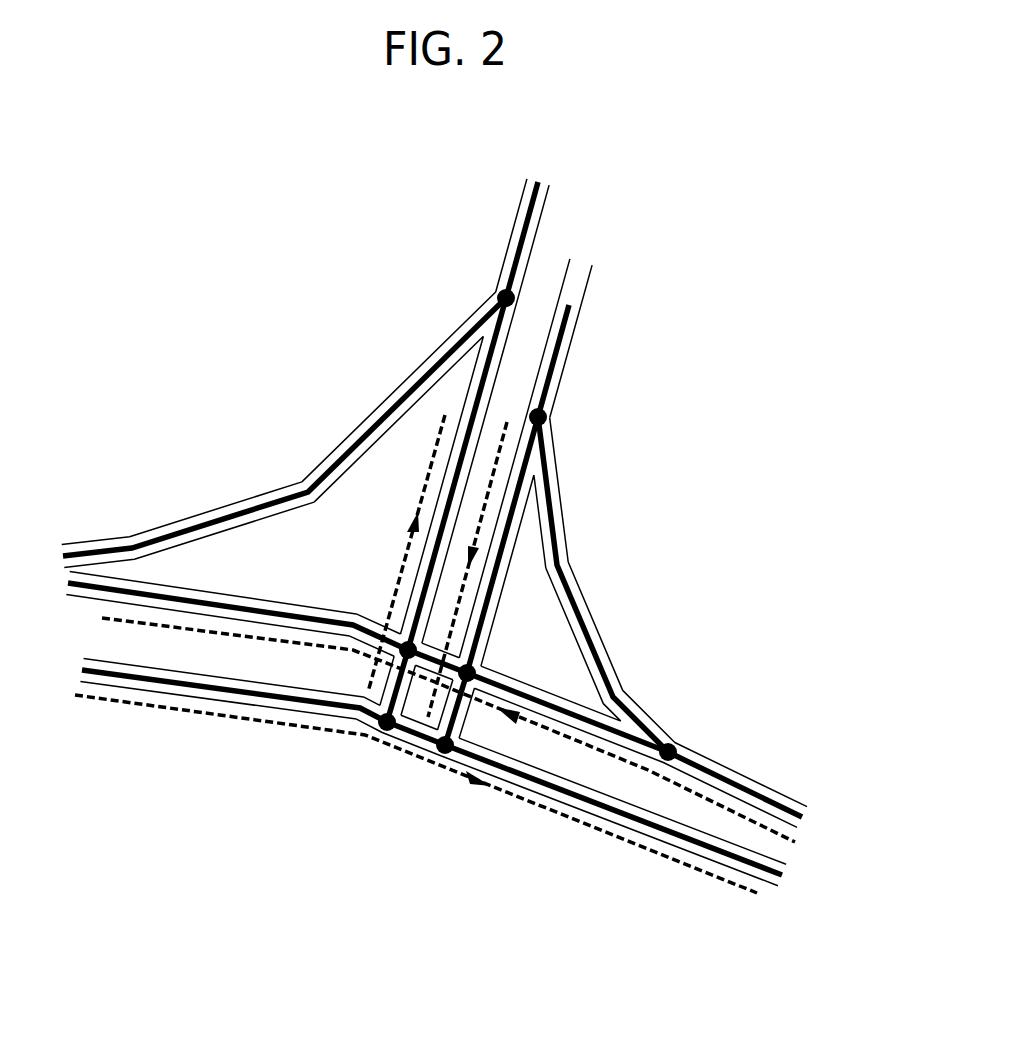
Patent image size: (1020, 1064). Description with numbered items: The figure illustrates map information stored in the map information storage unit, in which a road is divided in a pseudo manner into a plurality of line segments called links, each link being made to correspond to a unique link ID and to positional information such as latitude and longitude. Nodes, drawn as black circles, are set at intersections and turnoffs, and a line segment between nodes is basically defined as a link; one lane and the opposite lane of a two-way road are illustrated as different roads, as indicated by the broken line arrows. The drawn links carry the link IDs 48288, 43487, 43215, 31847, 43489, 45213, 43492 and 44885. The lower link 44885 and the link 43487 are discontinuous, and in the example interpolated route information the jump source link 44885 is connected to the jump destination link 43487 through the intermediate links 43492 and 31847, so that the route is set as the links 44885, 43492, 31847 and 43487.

The link ID 48288 is at (527, 230).
The link ID 43487 is at (438, 542).
The link ID 43215 is at (428, 656).
The link ID 31847 is at (398, 683).
The link ID 43489 is at (547, 703).
The link ID 45213 is at (748, 785).
The link ID 43492 is at (407, 731).
The link ID 44885 is at (635, 821).